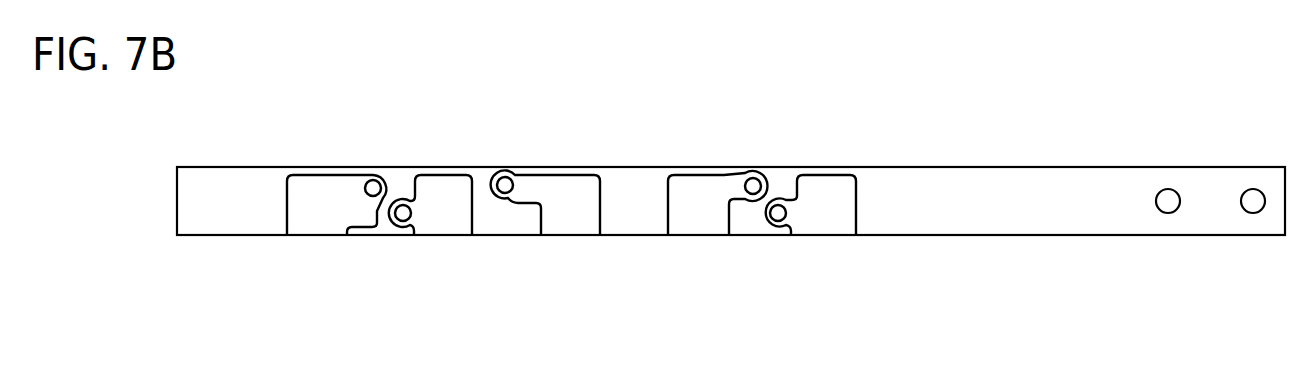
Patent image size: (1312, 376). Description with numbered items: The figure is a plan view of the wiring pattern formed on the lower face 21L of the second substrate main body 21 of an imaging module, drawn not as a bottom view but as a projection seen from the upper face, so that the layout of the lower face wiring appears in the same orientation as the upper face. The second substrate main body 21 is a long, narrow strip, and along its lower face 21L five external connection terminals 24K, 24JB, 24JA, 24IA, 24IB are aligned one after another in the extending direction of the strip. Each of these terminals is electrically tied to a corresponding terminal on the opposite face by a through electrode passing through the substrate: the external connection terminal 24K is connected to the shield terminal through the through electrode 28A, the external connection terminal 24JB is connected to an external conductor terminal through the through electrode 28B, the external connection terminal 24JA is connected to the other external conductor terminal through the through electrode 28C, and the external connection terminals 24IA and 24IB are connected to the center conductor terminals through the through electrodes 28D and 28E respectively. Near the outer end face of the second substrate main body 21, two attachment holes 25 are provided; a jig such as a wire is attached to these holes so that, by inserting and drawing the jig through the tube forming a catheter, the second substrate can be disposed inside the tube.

The lower face 21L is at (731, 129).
The second substrate main body 21 is at (731, 201).
The external connection terminal 24K is at (318, 219).
The external connection terminal 24JB is at (443, 218).
The external connection terminal 24JA is at (573, 218).
The external connection terminal 24IA is at (698, 218).
The external connection terminal 24IB is at (827, 218).
The through electrode 28A is at (373, 179).
The through electrode 28B is at (404, 204).
The through electrode 28C is at (504, 176).
The through electrode 28D is at (753, 177).
The through electrode 28E is at (782, 205).
The attachment holes 25 is at (1247, 198).